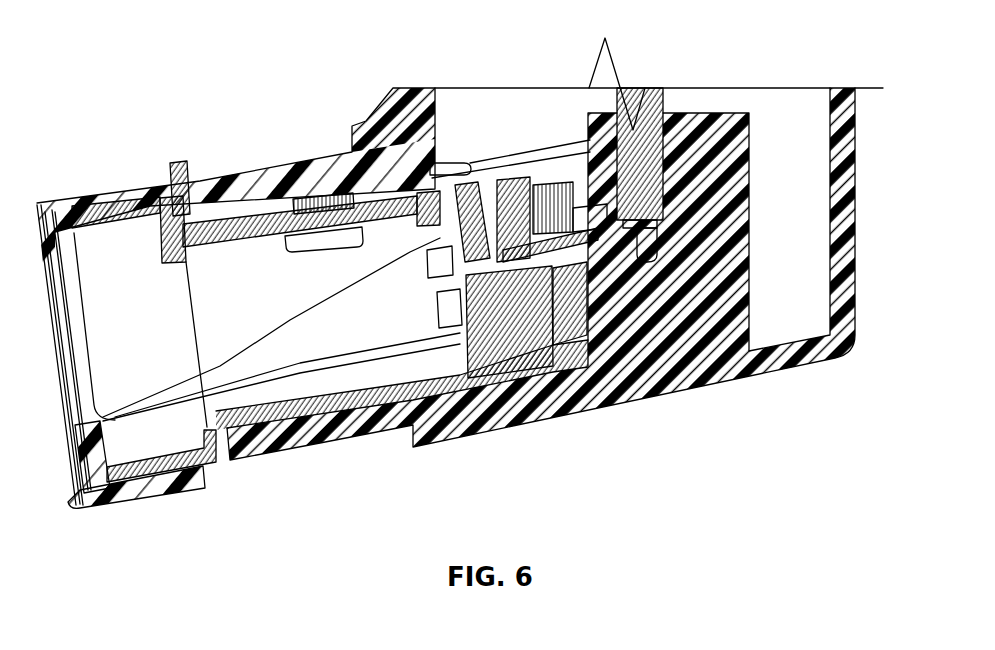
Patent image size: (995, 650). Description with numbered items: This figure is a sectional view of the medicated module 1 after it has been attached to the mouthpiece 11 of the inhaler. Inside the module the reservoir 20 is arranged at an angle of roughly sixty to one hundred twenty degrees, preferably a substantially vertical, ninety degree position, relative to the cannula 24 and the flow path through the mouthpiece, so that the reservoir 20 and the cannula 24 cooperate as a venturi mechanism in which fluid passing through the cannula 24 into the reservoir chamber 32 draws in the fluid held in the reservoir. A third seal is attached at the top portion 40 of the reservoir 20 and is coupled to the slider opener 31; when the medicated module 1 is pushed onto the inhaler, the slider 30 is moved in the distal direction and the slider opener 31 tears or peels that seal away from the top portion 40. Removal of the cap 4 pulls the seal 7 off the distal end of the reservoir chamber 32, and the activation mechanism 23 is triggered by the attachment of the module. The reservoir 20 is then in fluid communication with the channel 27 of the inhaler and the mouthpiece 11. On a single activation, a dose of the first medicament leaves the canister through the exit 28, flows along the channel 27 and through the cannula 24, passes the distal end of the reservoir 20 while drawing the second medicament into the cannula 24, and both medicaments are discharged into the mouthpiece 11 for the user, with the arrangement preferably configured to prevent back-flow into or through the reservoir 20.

The medicated module 1 is at (403, 372).
The cap 4 is at (55, 206).
The seal 7 is at (288, 330).
The mouthpiece 11 is at (153, 423).
The reservoir 20 is at (492, 205).
The activation mechanism 23 is at (560, 298).
The cannula 24 is at (568, 182).
The channel 27 is at (658, 243).
The exit 28 is at (633, 100).
The slider 30 is at (183, 180).
The slider opener 31 is at (447, 162).
The reservoir chamber 32 is at (455, 380).
The top portion 40 is at (470, 185).